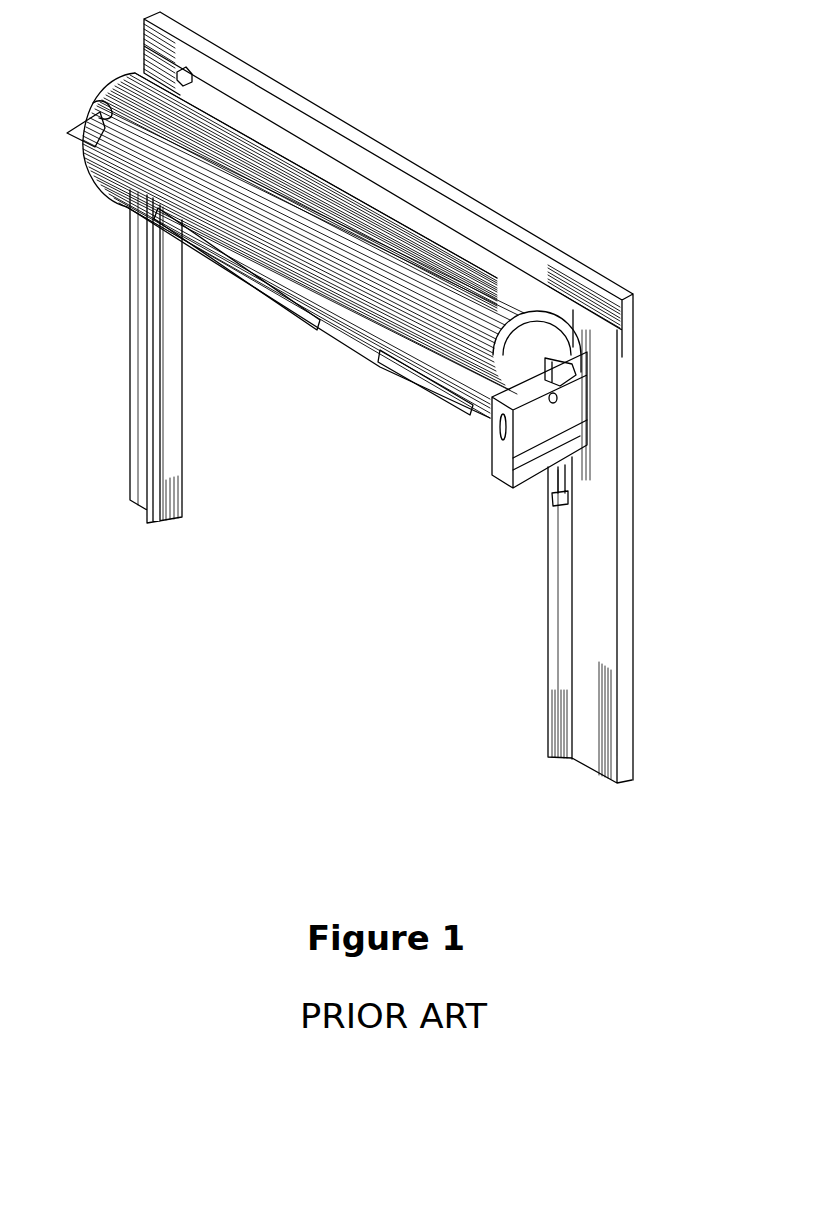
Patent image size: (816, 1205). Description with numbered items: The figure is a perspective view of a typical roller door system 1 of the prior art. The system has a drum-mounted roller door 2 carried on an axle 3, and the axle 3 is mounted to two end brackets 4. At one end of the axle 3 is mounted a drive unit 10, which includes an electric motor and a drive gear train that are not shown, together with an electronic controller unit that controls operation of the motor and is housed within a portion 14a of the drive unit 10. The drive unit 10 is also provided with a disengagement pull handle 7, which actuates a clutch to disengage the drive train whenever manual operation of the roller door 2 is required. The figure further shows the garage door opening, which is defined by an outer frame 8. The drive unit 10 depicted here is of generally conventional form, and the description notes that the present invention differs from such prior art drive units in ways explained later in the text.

The roller door system 1 is at (316, 461).
The roller door 2 is at (345, 328).
The axle 3 is at (93, 98).
The end bracket 4 is at (572, 395).
The disengagement pull handle 7 is at (572, 496).
The outer frame 8 is at (188, 390).
The drive unit 10 is at (553, 424).
The portion of the drive unit 14a is at (553, 448).